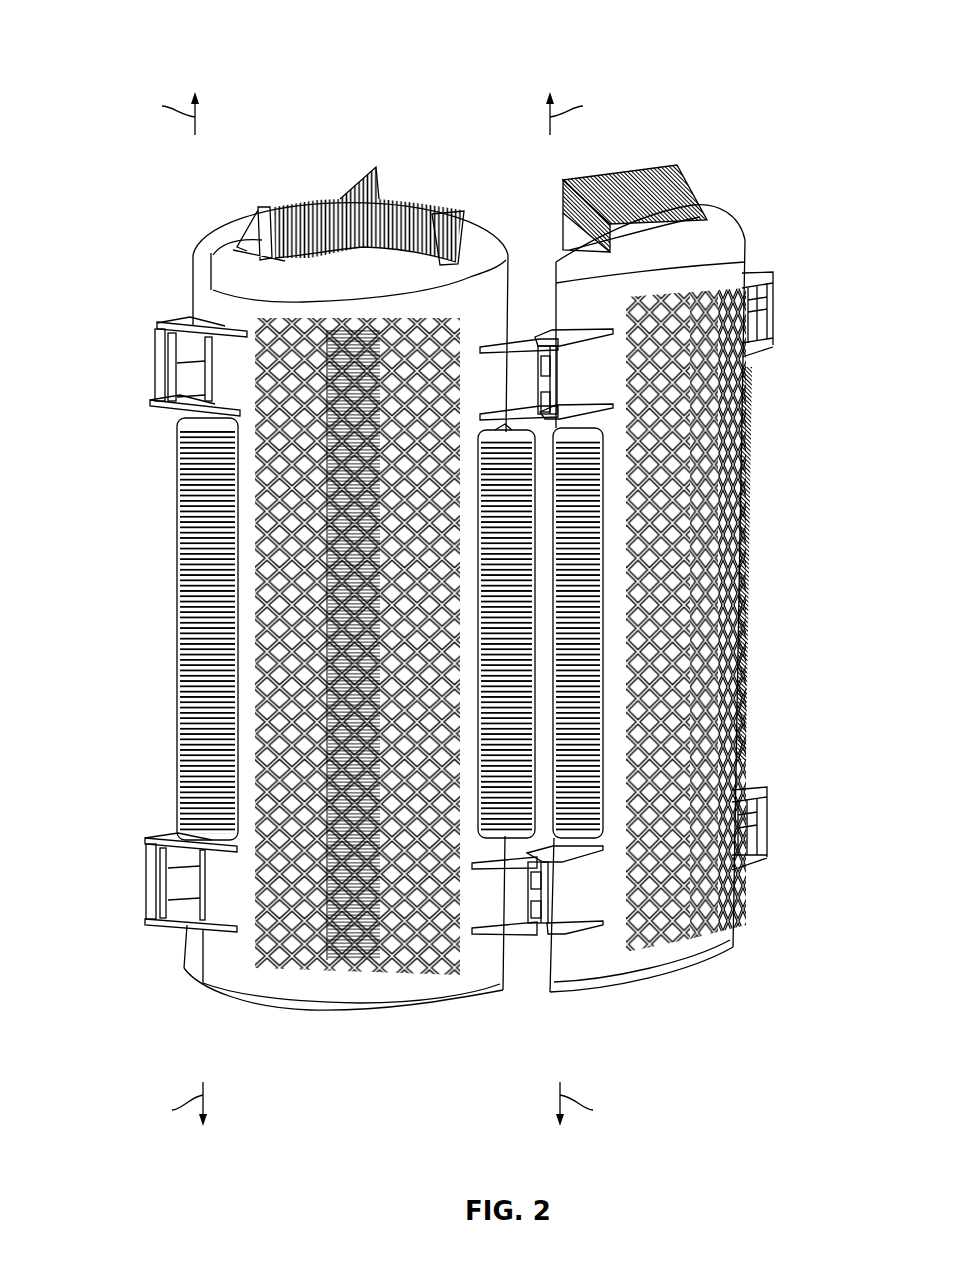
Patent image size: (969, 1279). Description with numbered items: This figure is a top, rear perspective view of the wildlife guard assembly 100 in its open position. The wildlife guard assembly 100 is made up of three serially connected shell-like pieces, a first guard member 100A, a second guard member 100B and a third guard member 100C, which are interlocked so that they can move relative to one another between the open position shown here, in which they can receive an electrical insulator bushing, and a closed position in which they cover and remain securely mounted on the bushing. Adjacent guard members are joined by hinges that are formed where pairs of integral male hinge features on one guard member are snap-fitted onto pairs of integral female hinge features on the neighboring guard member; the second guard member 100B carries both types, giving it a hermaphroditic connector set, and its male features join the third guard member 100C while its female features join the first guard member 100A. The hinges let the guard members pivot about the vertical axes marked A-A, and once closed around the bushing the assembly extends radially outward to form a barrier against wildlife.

The wildlife guard assembly 100 is at (167, 36).
The first guard member 100A is at (683, 992).
The second guard member 100B is at (396, 1016).
The third guard member 100C is at (186, 272).